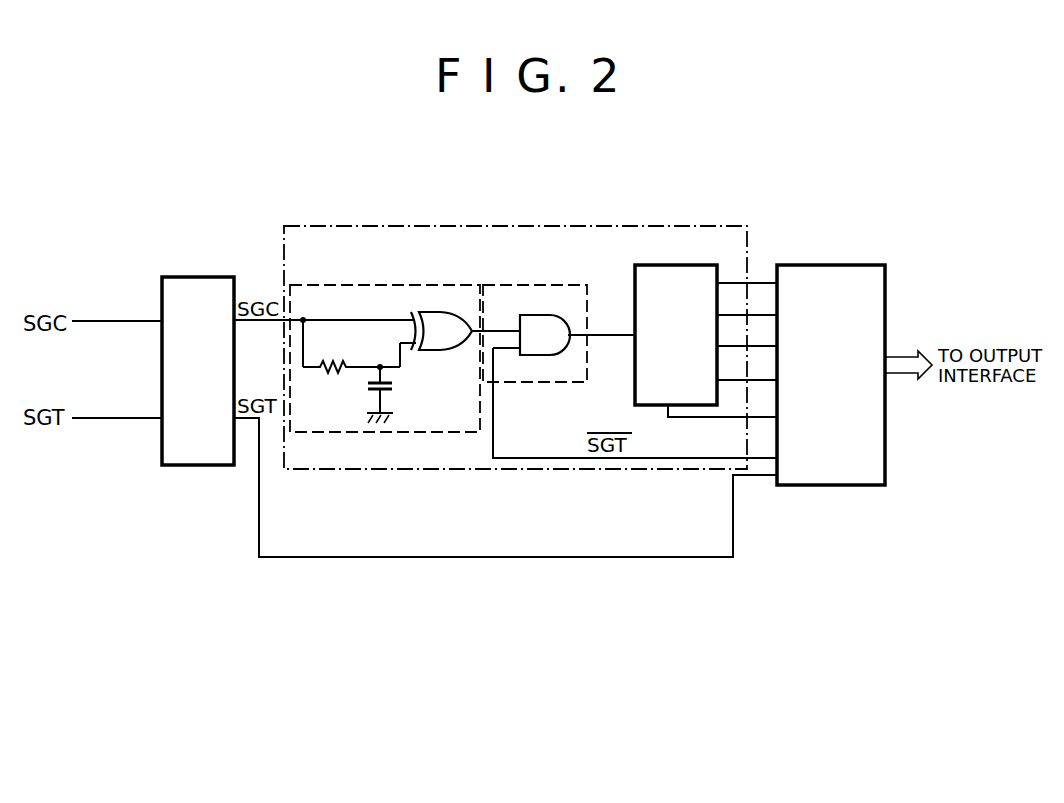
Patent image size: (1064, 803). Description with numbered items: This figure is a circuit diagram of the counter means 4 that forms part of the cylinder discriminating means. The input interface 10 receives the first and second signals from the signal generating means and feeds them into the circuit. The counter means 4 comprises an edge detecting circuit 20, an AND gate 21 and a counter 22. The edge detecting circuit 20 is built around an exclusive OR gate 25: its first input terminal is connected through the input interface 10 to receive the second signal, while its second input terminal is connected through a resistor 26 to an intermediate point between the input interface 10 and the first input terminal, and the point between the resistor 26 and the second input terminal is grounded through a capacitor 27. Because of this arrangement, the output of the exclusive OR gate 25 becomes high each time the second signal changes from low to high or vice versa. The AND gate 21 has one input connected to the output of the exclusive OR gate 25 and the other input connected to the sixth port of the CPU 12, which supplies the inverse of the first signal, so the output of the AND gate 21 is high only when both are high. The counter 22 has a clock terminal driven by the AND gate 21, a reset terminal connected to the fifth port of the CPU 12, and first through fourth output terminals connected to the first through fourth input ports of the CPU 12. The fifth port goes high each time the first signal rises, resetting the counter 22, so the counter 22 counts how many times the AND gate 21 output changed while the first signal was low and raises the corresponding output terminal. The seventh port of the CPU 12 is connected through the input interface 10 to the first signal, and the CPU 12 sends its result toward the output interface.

The input interface 10 is at (218, 277).
The counter means 4 is at (700, 224).
The edge detecting circuit 20 is at (467, 285).
The AND gate 21 is at (557, 323).
The counter 22 is at (635, 395).
The exclusive OR gate 25 is at (437, 350).
The resistor 26 is at (337, 371).
The capacitor 27 is at (393, 392).
The central processing unit 12 is at (842, 265).